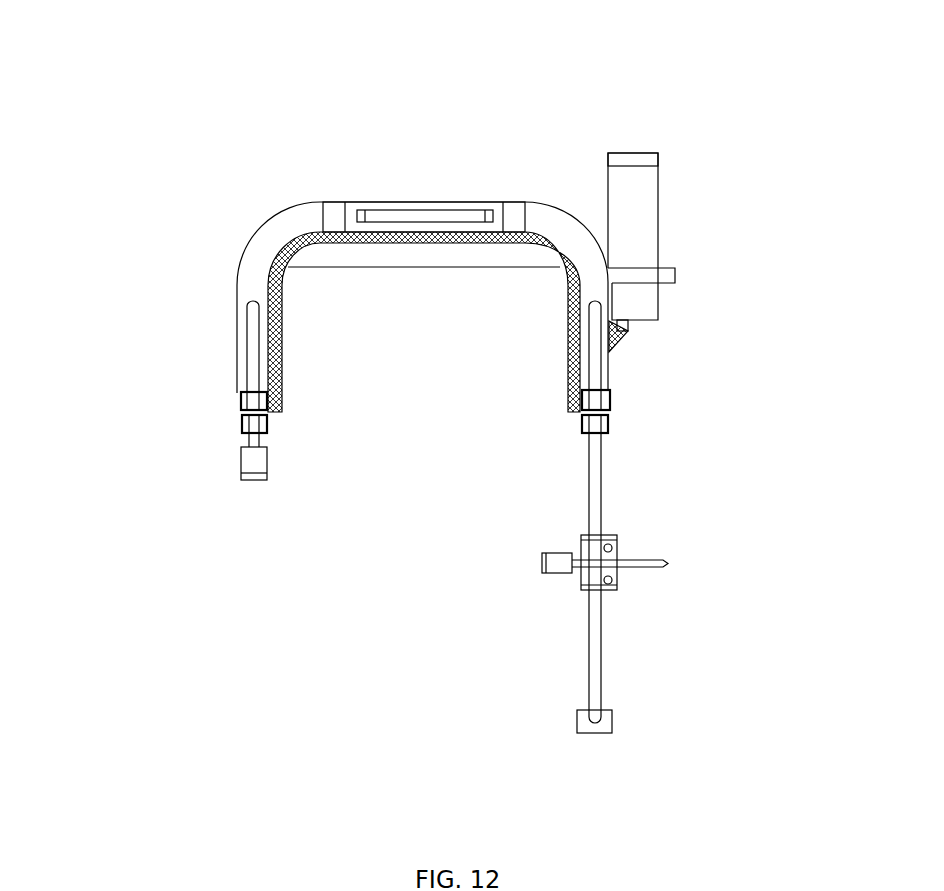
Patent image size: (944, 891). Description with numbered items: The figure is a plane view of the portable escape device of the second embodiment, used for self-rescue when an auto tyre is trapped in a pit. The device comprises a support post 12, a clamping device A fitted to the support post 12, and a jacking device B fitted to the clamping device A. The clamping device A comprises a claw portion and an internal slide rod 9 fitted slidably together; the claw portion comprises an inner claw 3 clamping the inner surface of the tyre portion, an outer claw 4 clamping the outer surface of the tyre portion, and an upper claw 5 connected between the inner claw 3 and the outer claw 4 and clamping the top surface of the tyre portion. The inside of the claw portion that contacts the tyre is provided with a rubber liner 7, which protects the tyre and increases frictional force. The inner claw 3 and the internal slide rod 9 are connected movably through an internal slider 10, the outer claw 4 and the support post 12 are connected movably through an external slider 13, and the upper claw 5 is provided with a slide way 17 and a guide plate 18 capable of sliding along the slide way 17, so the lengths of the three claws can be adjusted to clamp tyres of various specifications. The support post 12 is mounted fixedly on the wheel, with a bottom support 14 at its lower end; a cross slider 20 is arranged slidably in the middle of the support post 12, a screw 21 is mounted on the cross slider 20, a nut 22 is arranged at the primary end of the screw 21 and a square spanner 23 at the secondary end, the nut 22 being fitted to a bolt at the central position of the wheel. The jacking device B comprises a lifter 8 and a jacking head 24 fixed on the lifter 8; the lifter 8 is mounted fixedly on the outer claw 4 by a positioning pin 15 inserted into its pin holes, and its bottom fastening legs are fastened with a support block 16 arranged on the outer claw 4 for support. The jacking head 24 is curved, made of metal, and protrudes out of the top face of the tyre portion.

The inner claw 3 is at (238, 350).
The outer claw 4 is at (610, 377).
The upper claw 5 is at (300, 207).
The rubber liner 7 is at (280, 343).
The lifter 8 is at (657, 222).
The internal slide rod 9 is at (247, 315).
The internal slider 10 is at (240, 425).
The support post 12 is at (602, 480).
The external slider 13 is at (583, 438).
The bottom support 14 is at (613, 732).
The positioning pin 15 is at (676, 272).
The support block 16 is at (628, 340).
The slide way 17 is at (347, 208).
The guide plate 18 is at (448, 207).
The cross slider 20 is at (597, 595).
The screw 21 is at (628, 569).
The nut 22 is at (543, 575).
The square spanner 23 is at (667, 563).
The jacking head 24 is at (620, 160).
The clamping device A is at (512, 198).
The jacking device B is at (667, 186).